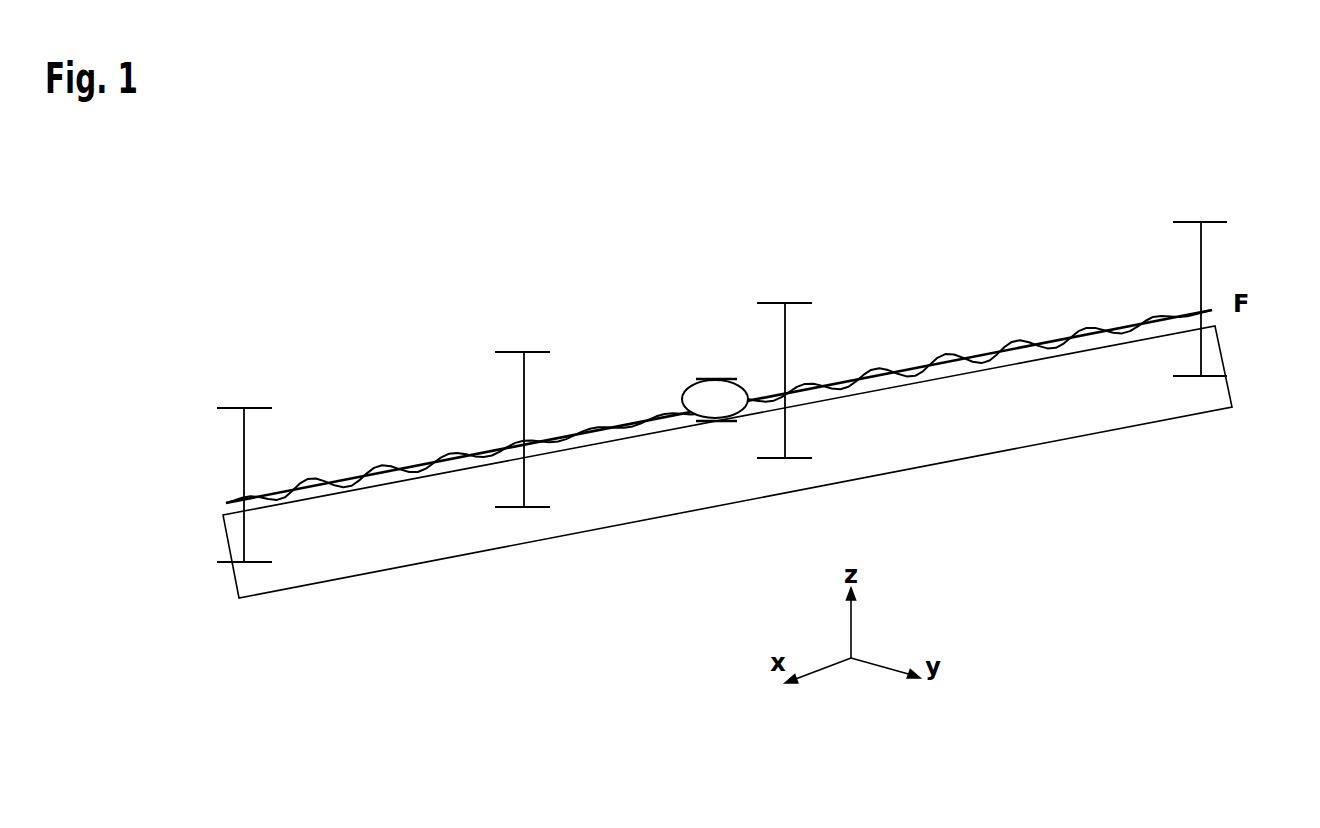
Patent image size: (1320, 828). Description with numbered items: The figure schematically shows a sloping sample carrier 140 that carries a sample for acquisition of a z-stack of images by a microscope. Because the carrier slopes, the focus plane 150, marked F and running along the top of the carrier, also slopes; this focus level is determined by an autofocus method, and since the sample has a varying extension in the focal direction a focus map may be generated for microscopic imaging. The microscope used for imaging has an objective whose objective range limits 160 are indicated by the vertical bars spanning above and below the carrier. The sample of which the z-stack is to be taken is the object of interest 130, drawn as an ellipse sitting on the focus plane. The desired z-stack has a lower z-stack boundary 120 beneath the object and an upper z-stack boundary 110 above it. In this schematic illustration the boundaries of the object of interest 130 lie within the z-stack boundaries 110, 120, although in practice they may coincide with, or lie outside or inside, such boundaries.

The upper z-stack boundary 110 is at (720, 369).
The lower z-stack boundary 120 is at (718, 430).
The object of interest 130 is at (689, 385).
The sample carrier 140 is at (994, 408).
The focus plane 150 is at (1096, 349).
The objective range limits 160 is at (1202, 245).